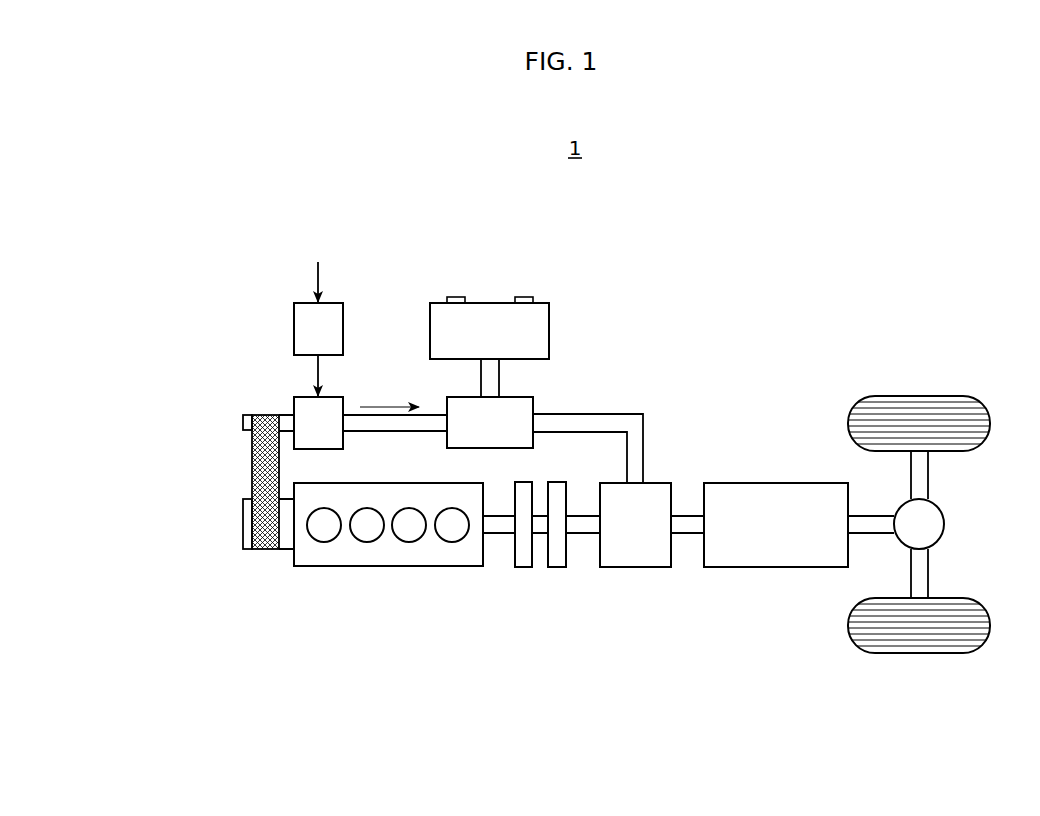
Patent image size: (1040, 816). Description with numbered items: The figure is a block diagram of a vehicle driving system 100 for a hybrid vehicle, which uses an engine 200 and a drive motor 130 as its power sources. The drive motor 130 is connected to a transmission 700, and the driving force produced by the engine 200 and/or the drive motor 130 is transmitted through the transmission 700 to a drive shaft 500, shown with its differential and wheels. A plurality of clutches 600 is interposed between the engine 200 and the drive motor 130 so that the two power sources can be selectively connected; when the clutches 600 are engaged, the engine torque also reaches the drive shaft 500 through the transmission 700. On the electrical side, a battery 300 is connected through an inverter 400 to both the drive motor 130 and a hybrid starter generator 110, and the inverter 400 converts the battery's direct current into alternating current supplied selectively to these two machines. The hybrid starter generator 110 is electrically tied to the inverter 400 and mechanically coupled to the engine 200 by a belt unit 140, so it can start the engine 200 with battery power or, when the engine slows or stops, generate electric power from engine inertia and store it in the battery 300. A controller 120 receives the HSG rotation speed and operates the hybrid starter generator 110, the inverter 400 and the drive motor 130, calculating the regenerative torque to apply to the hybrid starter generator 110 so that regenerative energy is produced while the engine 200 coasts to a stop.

The vehicle driving system 100 is at (782, 283).
The hybrid starter generator 110 is at (342, 396).
The controller 120 is at (345, 302).
The drive motor 130 is at (671, 483).
The belt unit 140 is at (251, 472).
The engine 200 is at (316, 580).
The battery 300 is at (483, 303).
The inverter 400 is at (533, 397).
The drive shaft 500 is at (870, 533).
The clutches 600 is at (555, 480).
The transmission 700 is at (800, 483).